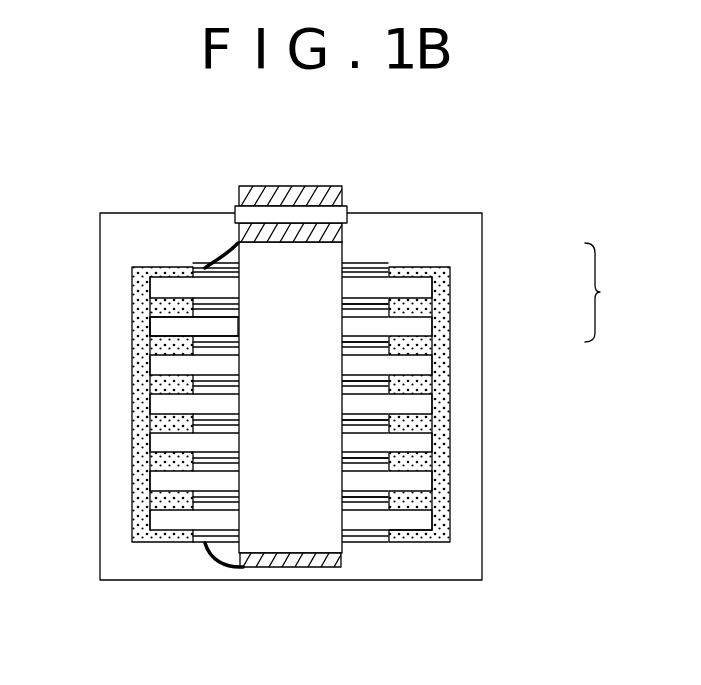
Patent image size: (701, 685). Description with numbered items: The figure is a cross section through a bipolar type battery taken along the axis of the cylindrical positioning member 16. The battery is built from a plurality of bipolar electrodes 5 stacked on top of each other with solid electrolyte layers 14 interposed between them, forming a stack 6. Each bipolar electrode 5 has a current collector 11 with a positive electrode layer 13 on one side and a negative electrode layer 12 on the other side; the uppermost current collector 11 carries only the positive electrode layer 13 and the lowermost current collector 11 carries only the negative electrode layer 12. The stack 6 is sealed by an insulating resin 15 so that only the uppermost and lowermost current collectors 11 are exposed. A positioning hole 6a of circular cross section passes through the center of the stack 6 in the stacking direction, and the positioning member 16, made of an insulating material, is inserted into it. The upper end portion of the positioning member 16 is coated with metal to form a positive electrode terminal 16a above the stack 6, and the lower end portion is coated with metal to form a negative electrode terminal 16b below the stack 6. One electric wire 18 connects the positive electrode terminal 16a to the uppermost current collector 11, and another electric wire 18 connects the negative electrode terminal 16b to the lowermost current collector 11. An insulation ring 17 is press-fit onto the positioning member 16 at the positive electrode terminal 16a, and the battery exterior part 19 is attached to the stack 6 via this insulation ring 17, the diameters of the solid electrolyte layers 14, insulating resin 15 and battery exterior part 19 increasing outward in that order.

The bipolar electrode 5 is at (605, 292).
The stack 6 is at (440, 419).
The positioning hole 6a is at (343, 480).
The current collector 11 is at (385, 266).
The negative electrode layer 12 is at (400, 297).
The positive electrode layer 13 is at (400, 268).
The solid electrolyte layer 14 is at (422, 328).
The insulating resin 15 is at (432, 497).
The positioning member 16 is at (263, 361).
The positive electrode terminal 16a is at (292, 197).
The negative electrode terminal 16b is at (283, 560).
The insulation ring 17 is at (337, 213).
The electric wire 18 is at (222, 238).
The battery exterior part 19 is at (482, 555).